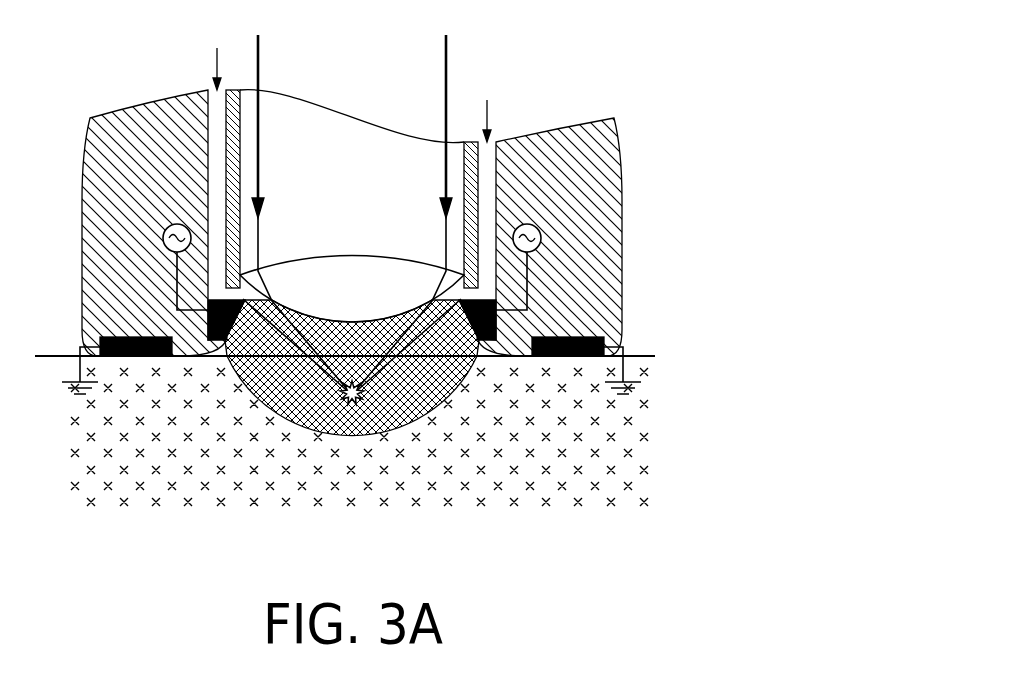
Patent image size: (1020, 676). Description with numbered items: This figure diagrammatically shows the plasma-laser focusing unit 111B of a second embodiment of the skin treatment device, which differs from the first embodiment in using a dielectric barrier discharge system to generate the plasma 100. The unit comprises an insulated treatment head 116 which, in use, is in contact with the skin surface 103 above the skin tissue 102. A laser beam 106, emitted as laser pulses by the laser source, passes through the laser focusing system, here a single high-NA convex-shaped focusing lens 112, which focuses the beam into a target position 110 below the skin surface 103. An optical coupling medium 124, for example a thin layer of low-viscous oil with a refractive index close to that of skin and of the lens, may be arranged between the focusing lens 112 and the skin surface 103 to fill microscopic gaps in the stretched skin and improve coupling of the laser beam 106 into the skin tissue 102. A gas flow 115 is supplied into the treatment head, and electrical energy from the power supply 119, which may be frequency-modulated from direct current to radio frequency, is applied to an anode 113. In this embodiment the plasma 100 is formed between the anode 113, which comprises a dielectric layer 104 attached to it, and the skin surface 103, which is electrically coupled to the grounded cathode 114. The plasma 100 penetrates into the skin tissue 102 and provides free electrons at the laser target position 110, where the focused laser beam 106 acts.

The plasma-laser focusing unit 111B is at (735, 33).
The plasma 100 is at (395, 400).
The skin tissue 102 is at (647, 436).
The skin surface 103 is at (655, 357).
The dielectric layer 104 is at (268, 357).
The laser beam 106 is at (447, 48).
The target position 110 is at (340, 397).
The focusing lens 112 is at (305, 258).
The anode 113 is at (497, 318).
The grounded cathode 114 is at (593, 338).
The gas flow 115 is at (217, 62).
The insulated treatment head 116 is at (617, 150).
The power supply 119 is at (542, 236).
The optical coupling medium 124 is at (363, 327).